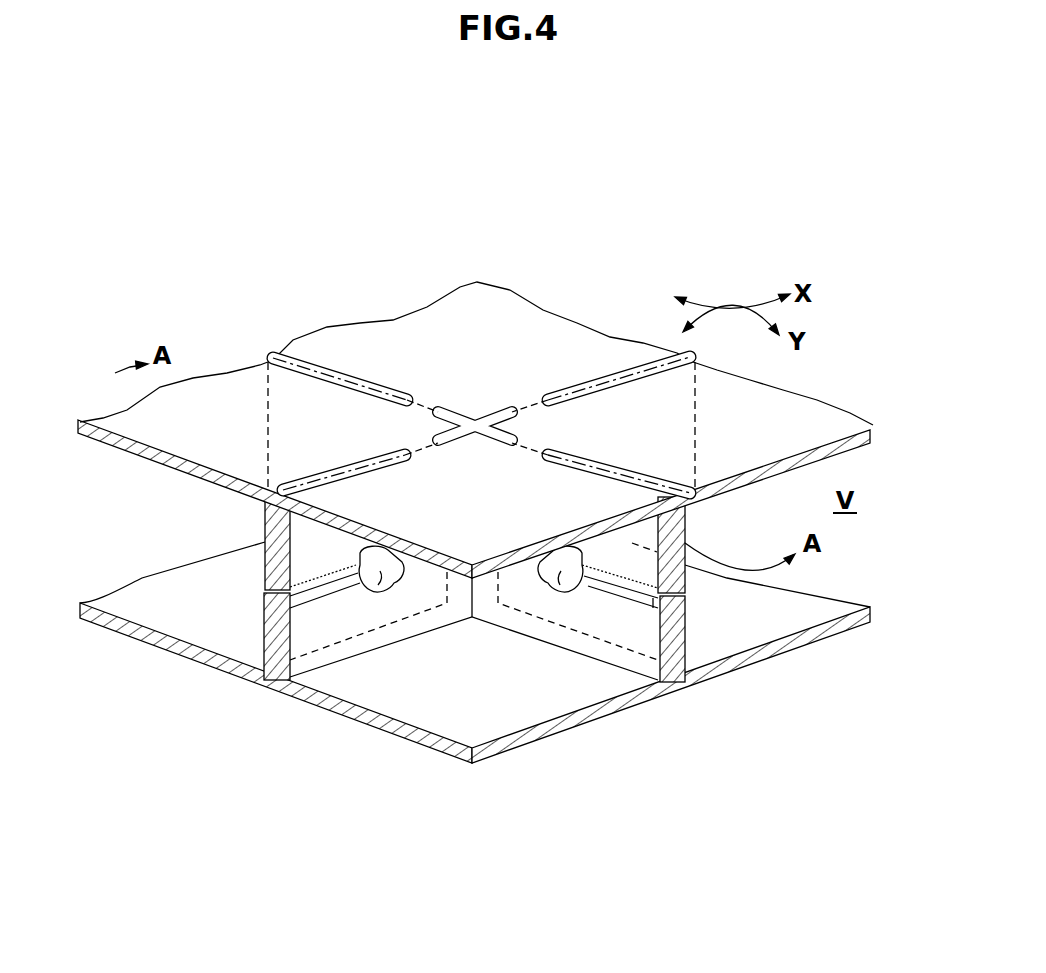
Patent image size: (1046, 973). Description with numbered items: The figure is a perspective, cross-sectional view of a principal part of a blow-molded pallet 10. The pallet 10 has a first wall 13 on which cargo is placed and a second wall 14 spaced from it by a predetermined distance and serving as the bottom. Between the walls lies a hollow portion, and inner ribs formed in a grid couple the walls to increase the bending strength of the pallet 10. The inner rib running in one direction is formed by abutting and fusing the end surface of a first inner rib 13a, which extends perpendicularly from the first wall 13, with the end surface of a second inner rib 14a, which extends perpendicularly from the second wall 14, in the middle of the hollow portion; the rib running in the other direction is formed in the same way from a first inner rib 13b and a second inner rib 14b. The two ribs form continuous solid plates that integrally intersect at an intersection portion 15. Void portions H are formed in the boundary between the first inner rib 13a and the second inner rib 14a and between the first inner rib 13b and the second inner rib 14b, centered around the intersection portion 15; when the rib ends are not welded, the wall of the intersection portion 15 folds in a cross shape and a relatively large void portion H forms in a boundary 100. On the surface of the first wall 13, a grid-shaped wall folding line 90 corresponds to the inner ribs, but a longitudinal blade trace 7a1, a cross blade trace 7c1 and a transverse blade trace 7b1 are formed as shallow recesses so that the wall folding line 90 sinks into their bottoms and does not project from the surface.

The pallet 10 is at (479, 516).
The first wall 13 is at (790, 422).
The first inner rib 13a is at (263, 533).
The first inner rib 13b is at (685, 540).
The second wall 14 is at (777, 648).
The second inner rib 14a is at (273, 640).
The second inner rib 14b is at (687, 627).
The intersection portion 15 is at (468, 597).
The wall folding line 90 is at (532, 402).
The longitudinal blade trace 7a1 is at (313, 475).
The transverse blade trace 7b1 is at (372, 385).
The cross blade trace 7c1 is at (455, 412).
The boundary 100 is at (657, 594).
The void portion H is at (380, 588).